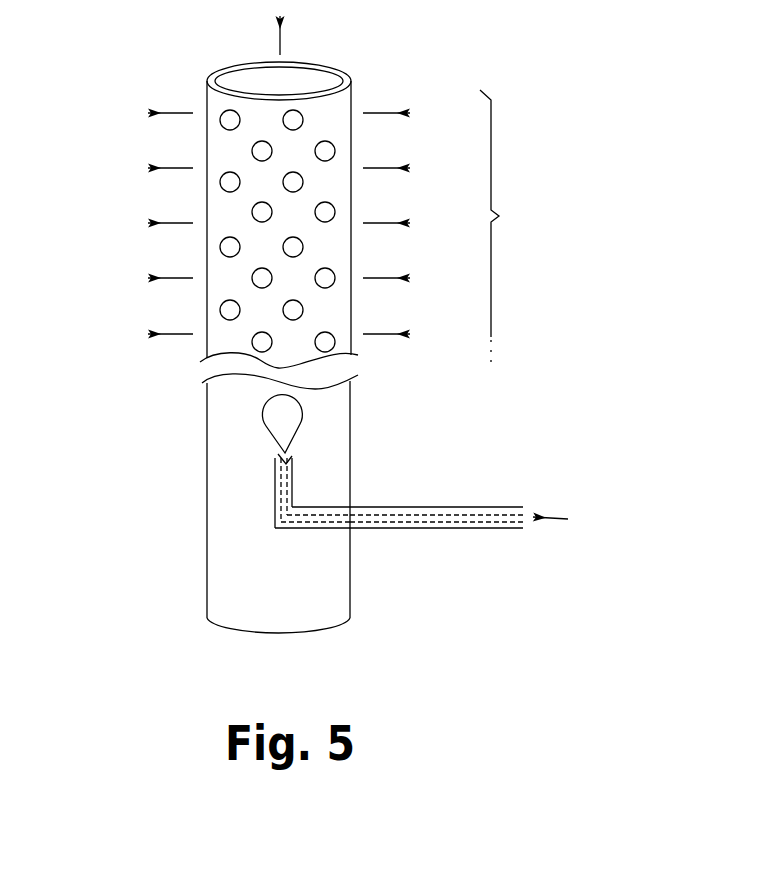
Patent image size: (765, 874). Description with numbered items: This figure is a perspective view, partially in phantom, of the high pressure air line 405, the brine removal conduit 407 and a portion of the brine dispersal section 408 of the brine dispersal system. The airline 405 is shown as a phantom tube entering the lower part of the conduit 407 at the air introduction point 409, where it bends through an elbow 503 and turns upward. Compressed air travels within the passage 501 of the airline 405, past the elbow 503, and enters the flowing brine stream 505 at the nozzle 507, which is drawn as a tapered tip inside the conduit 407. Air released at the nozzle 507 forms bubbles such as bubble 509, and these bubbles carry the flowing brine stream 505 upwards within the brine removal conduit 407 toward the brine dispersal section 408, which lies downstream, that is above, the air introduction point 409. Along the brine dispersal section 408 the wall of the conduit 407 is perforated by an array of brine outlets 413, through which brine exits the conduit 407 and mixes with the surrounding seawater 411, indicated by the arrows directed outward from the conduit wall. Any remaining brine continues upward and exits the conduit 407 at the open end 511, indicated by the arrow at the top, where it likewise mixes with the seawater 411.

The high pressure air line 405 is at (465, 507).
The brine removal conduit 407 is at (332, 403).
The brine dispersal section 408 is at (507, 229).
The air introduction point 409 is at (350, 505).
The surrounding seawater 411 is at (76, 268).
The brine outlets 413 is at (284, 243).
The passage 501 is at (567, 521).
The elbow 503 is at (273, 528).
The flowing brine stream 505 is at (281, 652).
The nozzle 507 is at (287, 452).
The bubble 509 is at (337, 193).
The open end 511 is at (312, 80).